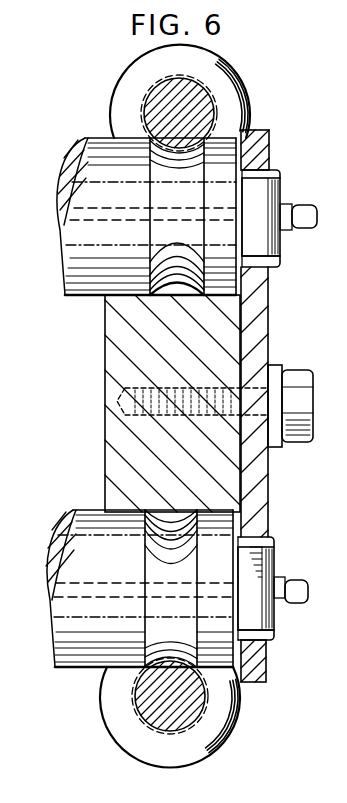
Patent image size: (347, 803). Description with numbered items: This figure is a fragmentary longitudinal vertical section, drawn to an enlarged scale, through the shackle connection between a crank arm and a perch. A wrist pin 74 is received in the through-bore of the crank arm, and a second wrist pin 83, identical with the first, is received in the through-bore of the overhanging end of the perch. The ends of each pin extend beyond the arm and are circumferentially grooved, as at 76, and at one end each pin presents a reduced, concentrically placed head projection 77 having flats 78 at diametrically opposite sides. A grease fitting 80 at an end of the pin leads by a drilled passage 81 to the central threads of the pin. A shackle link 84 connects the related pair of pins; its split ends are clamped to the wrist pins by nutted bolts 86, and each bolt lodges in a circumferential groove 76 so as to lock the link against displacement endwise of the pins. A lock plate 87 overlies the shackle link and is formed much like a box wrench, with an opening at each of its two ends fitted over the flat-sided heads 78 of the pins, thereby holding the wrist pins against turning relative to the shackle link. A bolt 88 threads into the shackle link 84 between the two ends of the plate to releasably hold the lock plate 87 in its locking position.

The wrist pin 74 is at (88, 512).
The circumferential groove 76 is at (200, 163).
The head projection 77 is at (282, 247).
The flats 78 is at (268, 190).
The grease fitting 80 is at (305, 210).
The drilled passage 81 is at (138, 204).
The wrist pin 83 is at (82, 285).
The link 84 is at (118, 343).
The nutted bolt 86 is at (167, 105).
The lock plate 87 is at (269, 302).
The bolt 88 is at (300, 373).